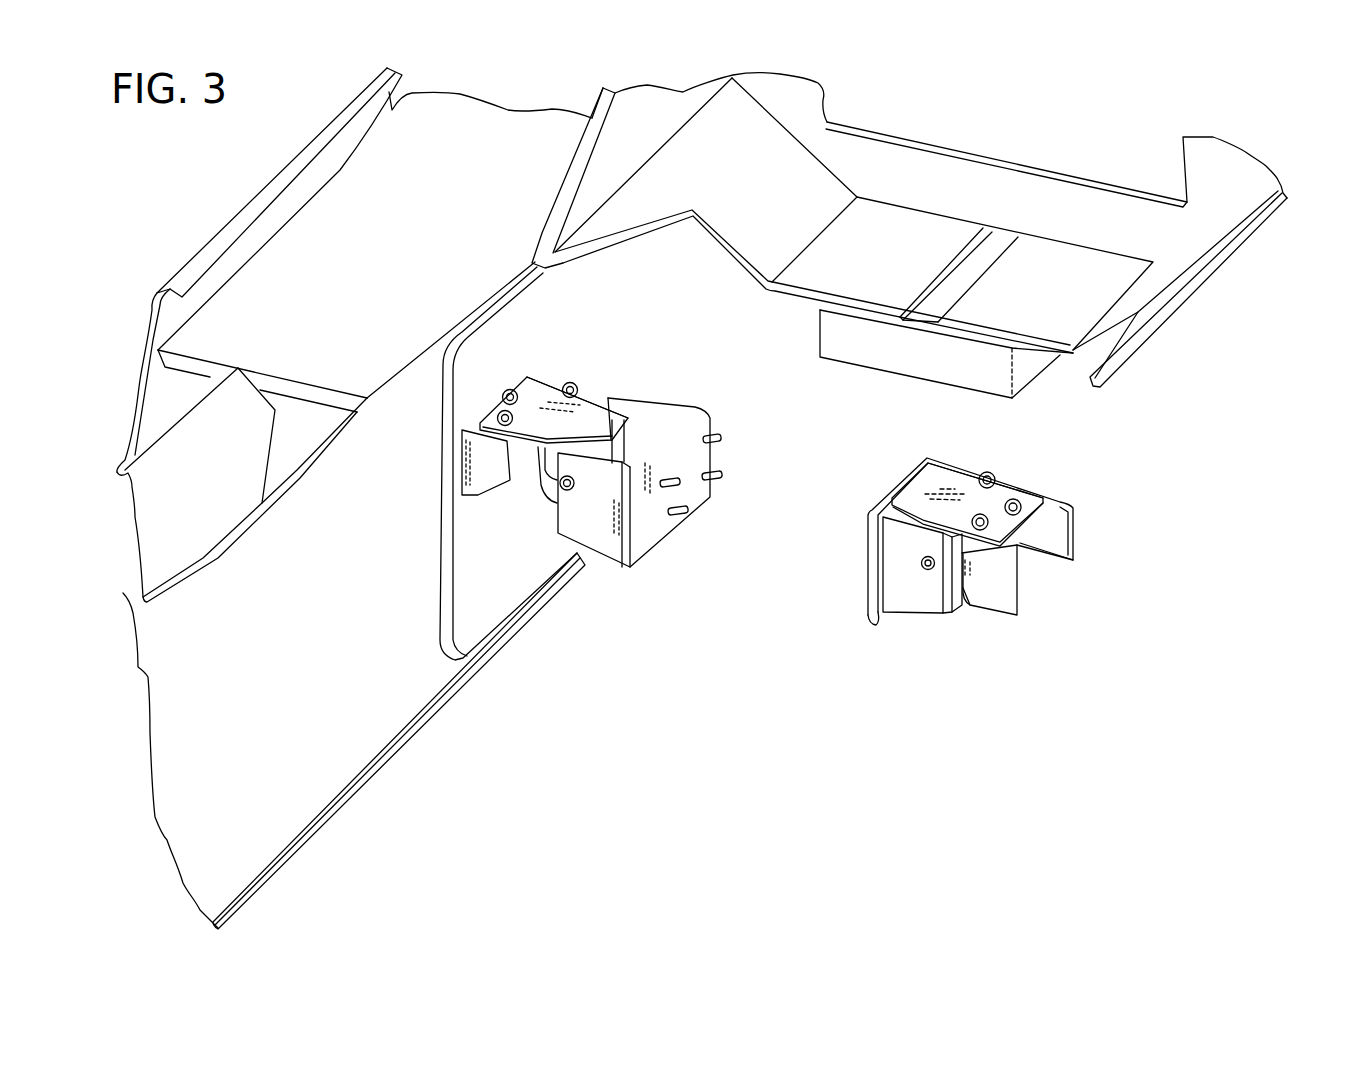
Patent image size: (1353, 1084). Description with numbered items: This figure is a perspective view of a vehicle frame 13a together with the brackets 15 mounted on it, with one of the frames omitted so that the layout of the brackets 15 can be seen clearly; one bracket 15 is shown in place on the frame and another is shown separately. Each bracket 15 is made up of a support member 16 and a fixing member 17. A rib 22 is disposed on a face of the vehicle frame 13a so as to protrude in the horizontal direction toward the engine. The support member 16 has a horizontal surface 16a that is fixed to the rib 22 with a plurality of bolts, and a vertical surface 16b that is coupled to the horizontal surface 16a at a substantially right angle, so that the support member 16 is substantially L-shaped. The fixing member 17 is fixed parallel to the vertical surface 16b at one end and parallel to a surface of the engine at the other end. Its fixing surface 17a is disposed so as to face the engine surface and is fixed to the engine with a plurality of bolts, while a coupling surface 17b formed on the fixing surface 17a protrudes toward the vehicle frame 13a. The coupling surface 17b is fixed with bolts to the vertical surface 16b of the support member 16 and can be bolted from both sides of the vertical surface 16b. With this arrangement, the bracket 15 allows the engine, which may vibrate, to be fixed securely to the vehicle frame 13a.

The vehicle frame 13a is at (387, 693).
The bracket 15 is at (643, 592).
The support member 16 is at (628, 241).
The horizontal surface 16a is at (535, 400).
The vertical surface 16b is at (545, 500).
The fixing member 17 is at (663, 413).
The fixing surface 17a is at (683, 440).
The coupling surface 17b is at (598, 527).
The rib 22 is at (487, 482).